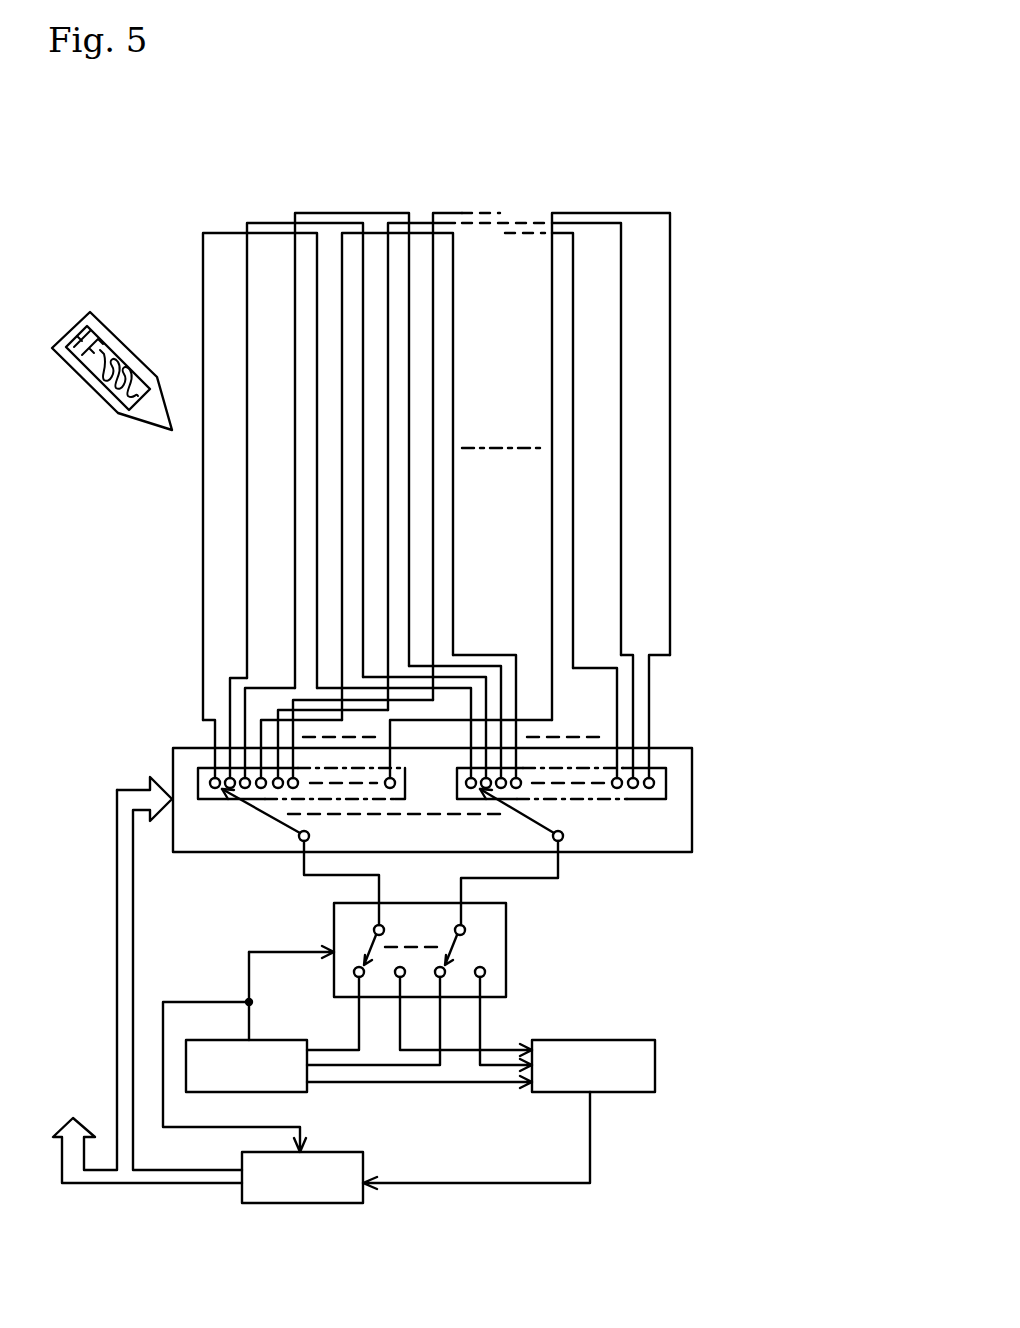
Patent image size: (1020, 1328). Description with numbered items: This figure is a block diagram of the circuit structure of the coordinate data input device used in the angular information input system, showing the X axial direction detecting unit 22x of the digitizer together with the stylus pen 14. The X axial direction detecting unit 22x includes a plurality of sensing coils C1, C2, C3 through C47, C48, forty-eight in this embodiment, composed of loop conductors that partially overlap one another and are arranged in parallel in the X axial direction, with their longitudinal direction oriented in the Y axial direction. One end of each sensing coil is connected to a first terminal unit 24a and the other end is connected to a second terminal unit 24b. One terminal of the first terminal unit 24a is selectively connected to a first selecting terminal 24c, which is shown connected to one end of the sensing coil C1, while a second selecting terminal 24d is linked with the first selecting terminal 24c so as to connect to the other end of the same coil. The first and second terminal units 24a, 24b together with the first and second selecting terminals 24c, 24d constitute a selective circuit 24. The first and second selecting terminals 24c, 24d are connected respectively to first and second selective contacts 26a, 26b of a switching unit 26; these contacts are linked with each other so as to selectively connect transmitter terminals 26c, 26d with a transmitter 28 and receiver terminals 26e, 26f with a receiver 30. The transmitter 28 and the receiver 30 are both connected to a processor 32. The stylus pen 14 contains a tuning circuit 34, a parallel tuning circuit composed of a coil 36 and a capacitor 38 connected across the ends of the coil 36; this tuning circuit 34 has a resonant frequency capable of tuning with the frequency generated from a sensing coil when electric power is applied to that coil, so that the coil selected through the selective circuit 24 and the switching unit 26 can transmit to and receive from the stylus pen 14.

The stylus pen 14 is at (153, 425).
The tuning circuit 34 is at (128, 352).
The coil 36 is at (97, 395).
The capacitor 38 is at (87, 322).
The X axial direction detecting unit 22x is at (190, 615).
The sensing coil C1 is at (222, 233).
The sensing coil C2 is at (262, 223).
The sensing coil C3 is at (328, 213).
The sensing coil C47 is at (598, 223).
The sensing coil C48 is at (640, 213).
The selective circuit 24 is at (692, 835).
The first terminal unit 24a is at (198, 773).
The second terminal unit 24b is at (667, 782).
The first selecting terminal 24c is at (252, 800).
The second selecting terminal 24d is at (540, 828).
The switching unit 26 is at (506, 982).
The first selective contact 26a is at (370, 947).
The second selective contact 26b is at (458, 945).
The transmitter terminal 26c is at (355, 975).
The transmitter terminal 26d is at (436, 975).
The receiver terminal 26e is at (396, 975).
The receiver terminal 26f is at (476, 975).
The transmitter 28 is at (297, 1092).
The receiver 30 is at (630, 1092).
The processor 32 is at (355, 1203).